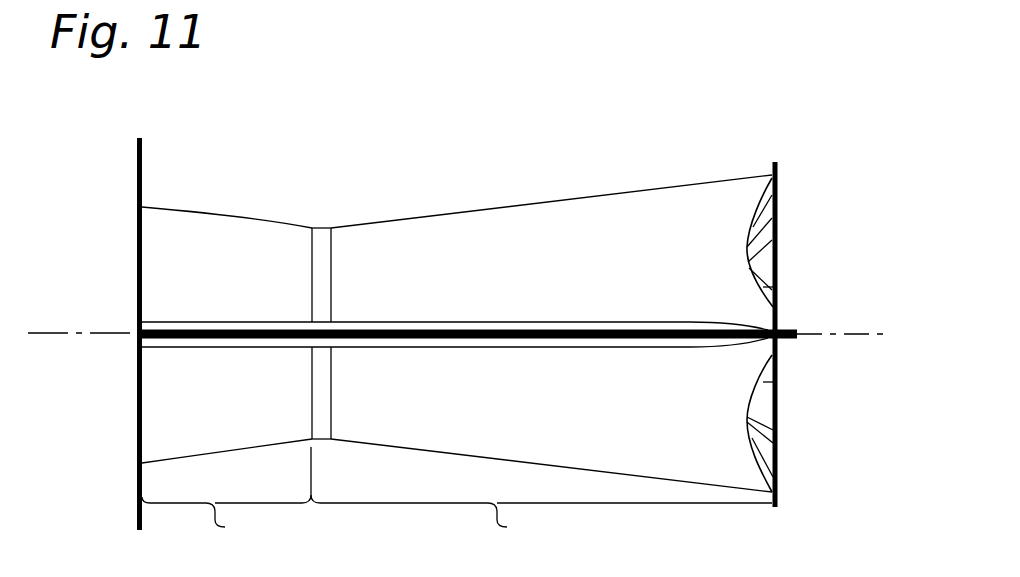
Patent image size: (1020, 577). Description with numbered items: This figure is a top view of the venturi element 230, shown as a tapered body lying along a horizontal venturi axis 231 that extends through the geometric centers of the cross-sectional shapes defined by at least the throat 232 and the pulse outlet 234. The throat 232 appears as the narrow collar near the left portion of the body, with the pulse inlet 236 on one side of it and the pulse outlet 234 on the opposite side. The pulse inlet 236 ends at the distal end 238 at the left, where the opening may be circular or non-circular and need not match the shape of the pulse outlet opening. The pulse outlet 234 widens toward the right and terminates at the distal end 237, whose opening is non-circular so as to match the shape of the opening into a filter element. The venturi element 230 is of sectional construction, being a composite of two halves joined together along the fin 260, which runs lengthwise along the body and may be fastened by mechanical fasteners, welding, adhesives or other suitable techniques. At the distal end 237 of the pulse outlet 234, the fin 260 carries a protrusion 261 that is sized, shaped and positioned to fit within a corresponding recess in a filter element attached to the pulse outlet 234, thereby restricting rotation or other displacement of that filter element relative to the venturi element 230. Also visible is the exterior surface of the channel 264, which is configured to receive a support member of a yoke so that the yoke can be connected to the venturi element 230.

The venturi element 230 is at (695, 130).
The distal end of the pulse inlet 238 is at (137, 230).
The venturi axis 231 is at (117, 333).
The pulse inlet 236 is at (227, 375).
The throat 232 is at (320, 228).
The pulse outlet 234 is at (541, 359).
The channel 264 is at (400, 322).
The fin 260 is at (470, 333).
The distal end of the pulse outlet 237 is at (778, 250).
The protrusion 261 is at (784, 332).